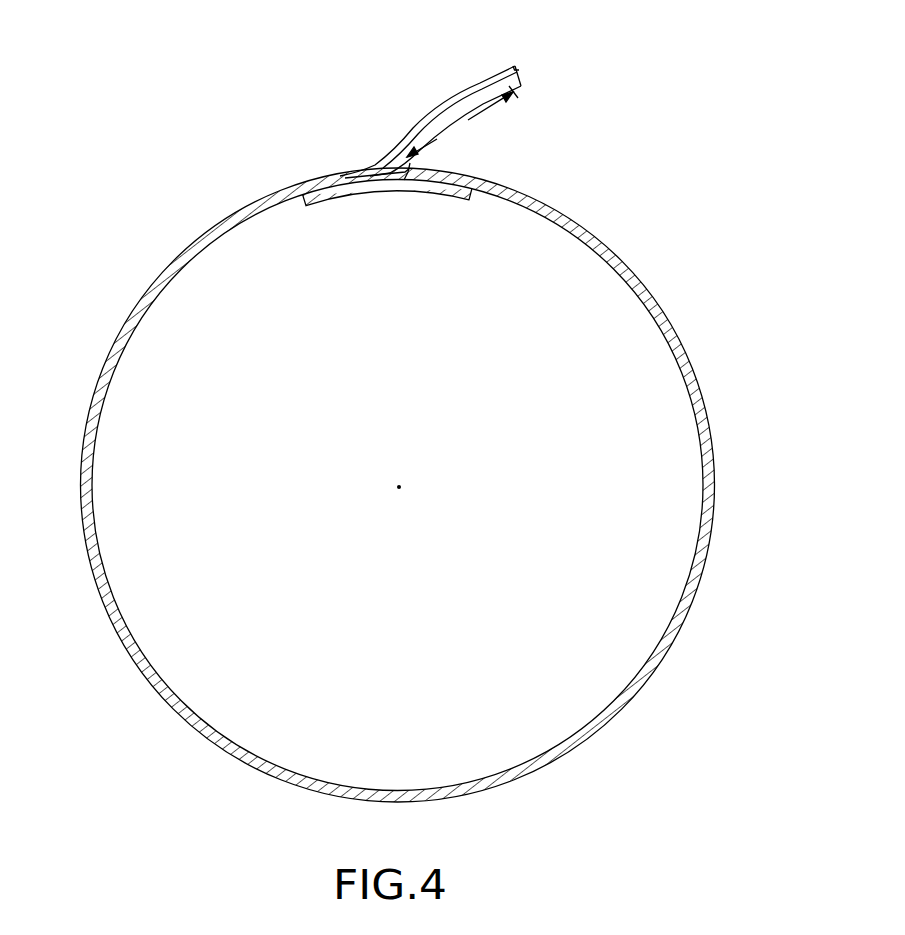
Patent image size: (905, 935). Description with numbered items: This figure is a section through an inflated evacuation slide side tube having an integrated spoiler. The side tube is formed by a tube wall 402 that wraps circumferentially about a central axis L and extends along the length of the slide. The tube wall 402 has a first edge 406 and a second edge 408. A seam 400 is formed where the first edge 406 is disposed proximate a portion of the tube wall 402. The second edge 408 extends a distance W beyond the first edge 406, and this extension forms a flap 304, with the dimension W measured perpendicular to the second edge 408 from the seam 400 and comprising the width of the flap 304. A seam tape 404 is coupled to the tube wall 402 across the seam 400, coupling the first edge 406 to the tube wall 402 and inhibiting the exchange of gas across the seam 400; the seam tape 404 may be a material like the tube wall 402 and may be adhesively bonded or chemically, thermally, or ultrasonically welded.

The flap 304 is at (414, 125).
The seam 400 is at (412, 165).
The tube wall 402 is at (647, 310).
The seam tape 404 is at (347, 196).
The first edge 406 is at (407, 186).
The second edge 408 is at (517, 67).
The width of flap W is at (462, 121).
The central axis L is at (407, 488).